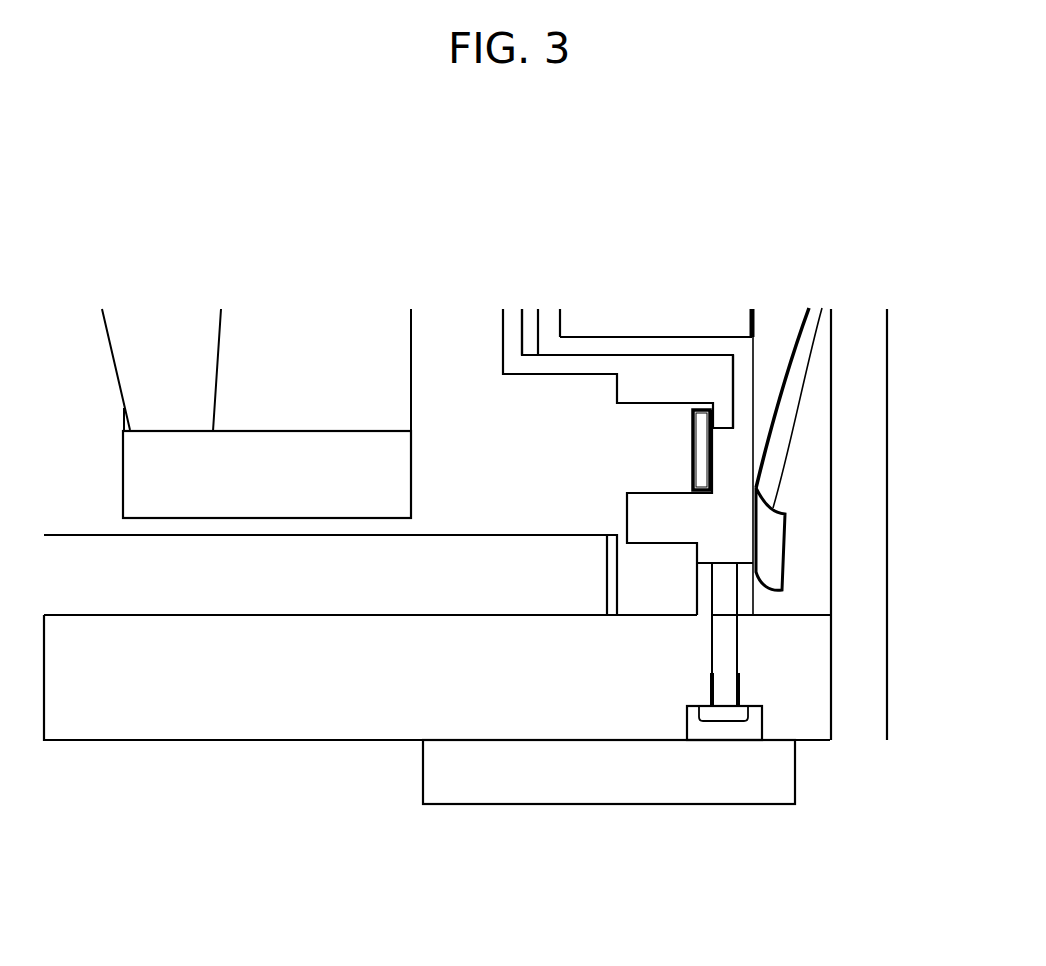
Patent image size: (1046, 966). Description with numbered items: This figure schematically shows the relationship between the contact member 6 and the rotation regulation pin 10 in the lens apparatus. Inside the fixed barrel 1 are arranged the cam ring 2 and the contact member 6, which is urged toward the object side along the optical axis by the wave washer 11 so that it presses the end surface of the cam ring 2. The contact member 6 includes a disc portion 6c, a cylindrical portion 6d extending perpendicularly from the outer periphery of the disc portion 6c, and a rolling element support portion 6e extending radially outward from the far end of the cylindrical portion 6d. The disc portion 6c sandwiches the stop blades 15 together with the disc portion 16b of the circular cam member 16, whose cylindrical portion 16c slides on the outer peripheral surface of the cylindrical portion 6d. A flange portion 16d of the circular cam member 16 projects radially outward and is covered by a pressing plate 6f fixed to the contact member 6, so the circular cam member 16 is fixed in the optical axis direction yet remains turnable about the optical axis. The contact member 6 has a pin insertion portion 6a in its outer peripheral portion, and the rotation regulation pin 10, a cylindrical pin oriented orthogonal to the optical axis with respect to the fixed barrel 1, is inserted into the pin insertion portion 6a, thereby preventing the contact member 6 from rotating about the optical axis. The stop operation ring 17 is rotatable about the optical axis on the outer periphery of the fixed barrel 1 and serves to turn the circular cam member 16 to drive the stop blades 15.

The fixed barrel 1 is at (337, 708).
The cam ring 2 is at (457, 560).
The contact member 6 is at (711, 323).
The pin insertion portion 6a is at (745, 602).
The disc portion 6c is at (550, 320).
The cylindrical portion 6d is at (632, 343).
The rolling element support portion 6e is at (745, 427).
The pressing plate 6f is at (702, 451).
The rotation regulation pin 10 is at (730, 712).
The wave washer 11 is at (772, 545).
The stop blades 15 is at (530, 317).
The circular cam member 16 is at (515, 363).
The disc portion 16b is at (512, 317).
The cylindrical portion 16c is at (553, 363).
The flange portion 16d is at (745, 400).
The stop operation ring 17 is at (586, 787).